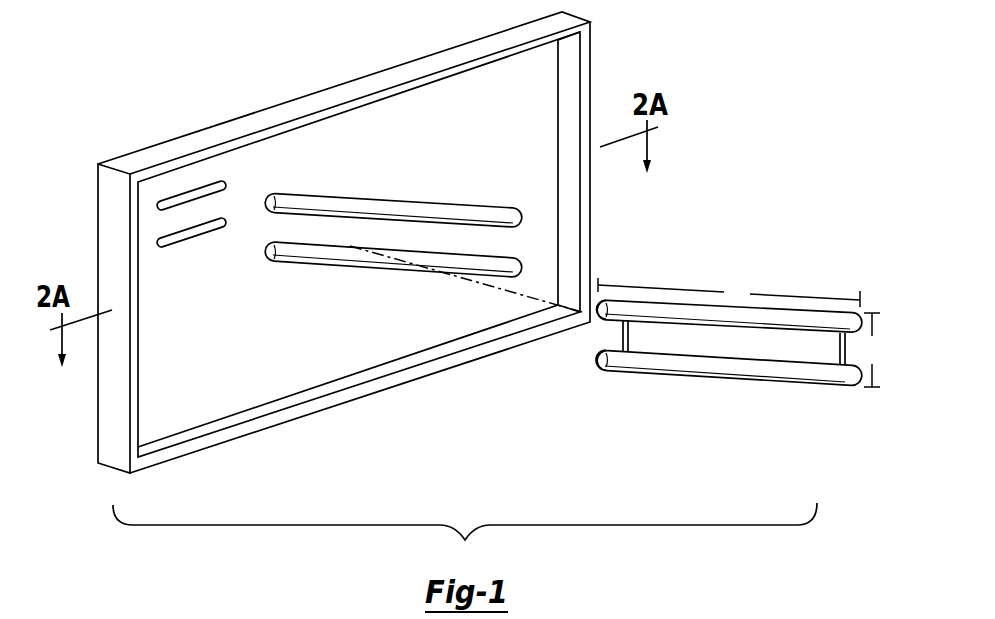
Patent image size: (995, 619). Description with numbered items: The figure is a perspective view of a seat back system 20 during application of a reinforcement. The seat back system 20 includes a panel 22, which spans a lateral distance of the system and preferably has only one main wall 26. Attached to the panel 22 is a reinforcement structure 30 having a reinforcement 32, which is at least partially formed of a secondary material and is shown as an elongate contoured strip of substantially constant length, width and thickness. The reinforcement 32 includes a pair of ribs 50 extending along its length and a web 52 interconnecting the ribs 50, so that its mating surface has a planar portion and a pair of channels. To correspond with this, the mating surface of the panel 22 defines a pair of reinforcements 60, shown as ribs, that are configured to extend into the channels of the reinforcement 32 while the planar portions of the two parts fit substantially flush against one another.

The seat back system 20 is at (344, 260).
The panel 22 is at (344, 260).
The main wall 26 is at (496, 119).
The reinforcement structure 30 is at (717, 287).
The reinforcement 32 is at (803, 351).
The ribs 50 is at (605, 322).
The web 52 is at (680, 342).
The reinforcements 60 is at (266, 204).